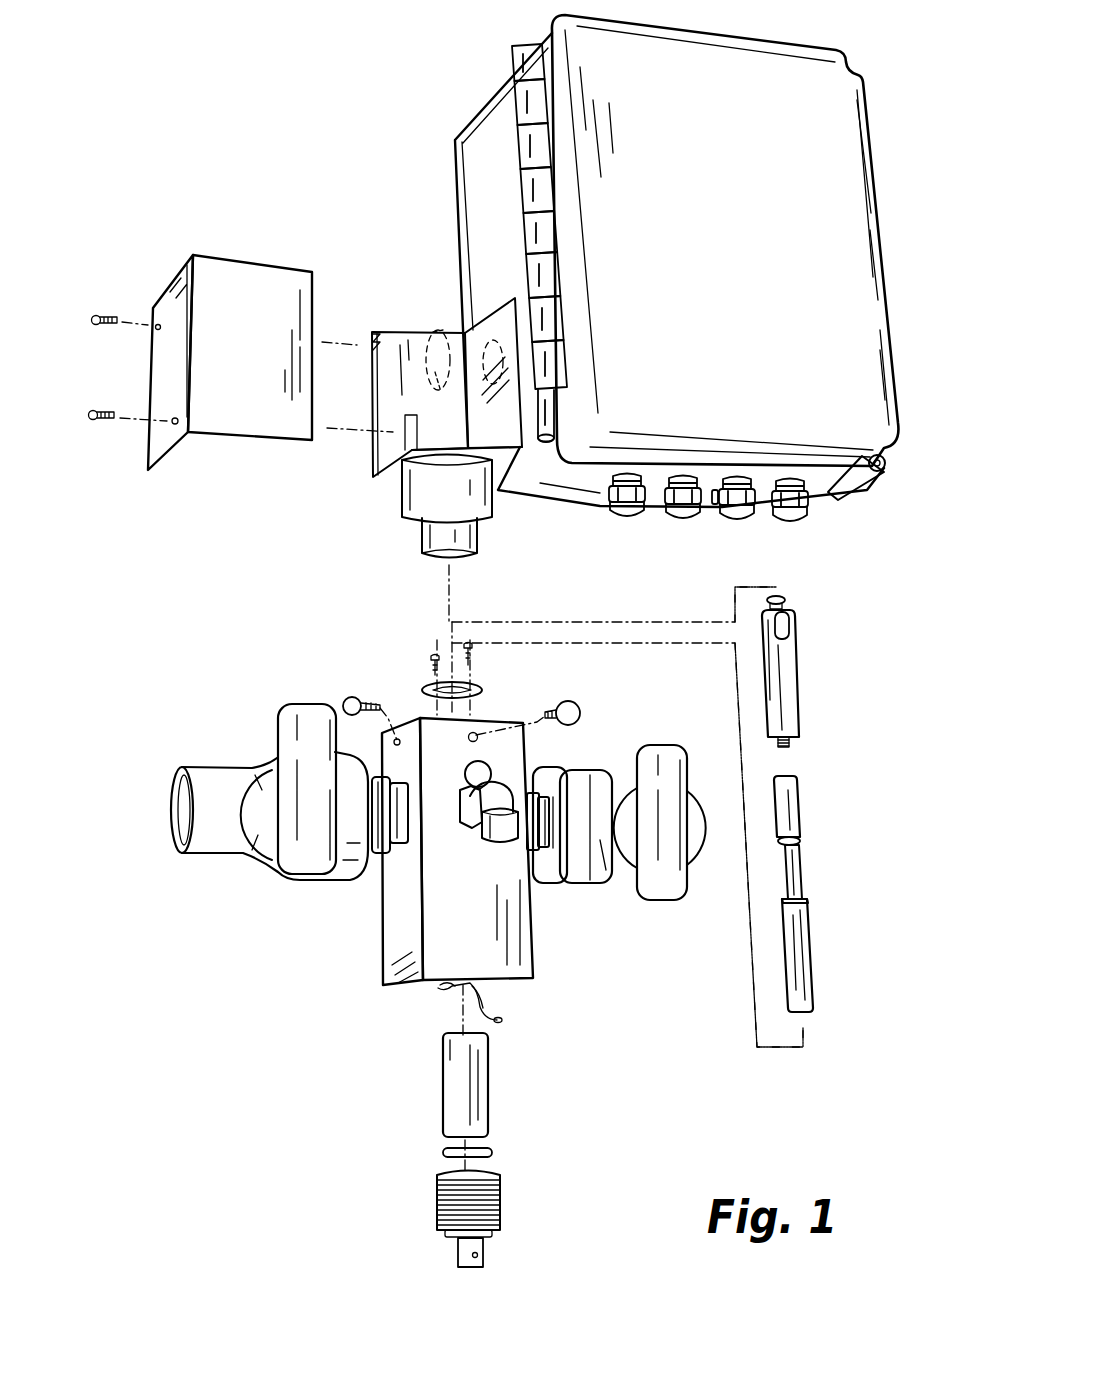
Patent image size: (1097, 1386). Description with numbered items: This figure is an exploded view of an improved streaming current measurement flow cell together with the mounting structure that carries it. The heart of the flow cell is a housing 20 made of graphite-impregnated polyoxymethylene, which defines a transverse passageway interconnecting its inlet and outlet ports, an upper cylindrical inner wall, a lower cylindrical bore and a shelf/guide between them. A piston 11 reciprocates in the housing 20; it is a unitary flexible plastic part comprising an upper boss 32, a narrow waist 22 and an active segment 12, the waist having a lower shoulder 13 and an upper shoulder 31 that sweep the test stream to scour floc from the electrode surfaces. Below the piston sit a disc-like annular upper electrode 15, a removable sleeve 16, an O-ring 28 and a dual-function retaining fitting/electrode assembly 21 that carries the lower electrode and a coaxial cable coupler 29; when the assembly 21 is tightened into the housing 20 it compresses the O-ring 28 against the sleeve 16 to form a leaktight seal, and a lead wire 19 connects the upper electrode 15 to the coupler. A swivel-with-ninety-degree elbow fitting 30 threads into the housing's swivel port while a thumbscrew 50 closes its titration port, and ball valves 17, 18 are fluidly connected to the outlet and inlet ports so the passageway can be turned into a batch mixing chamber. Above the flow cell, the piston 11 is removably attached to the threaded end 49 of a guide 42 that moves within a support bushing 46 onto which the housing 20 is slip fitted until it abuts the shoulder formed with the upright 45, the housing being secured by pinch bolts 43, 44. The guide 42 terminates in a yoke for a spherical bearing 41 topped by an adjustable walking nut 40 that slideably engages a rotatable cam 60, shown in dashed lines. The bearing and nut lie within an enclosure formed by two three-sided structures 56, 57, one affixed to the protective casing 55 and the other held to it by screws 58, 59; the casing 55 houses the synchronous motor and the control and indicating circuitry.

The piston 11 is at (832, 1045).
The active segment 12 is at (815, 970).
The lower shoulder 13 is at (804, 893).
The upper electrode 15 is at (483, 692).
The removable sleeve 16 is at (473, 1077).
The ball valve 17 is at (603, 912).
The ball valve 18 is at (215, 882).
The lead wire 19 is at (487, 998).
The housing 20 is at (390, 957).
The retaining fitting/electrode assembly 21 is at (532, 1227).
The waist 22 is at (800, 864).
The O-ring 28 is at (445, 1147).
The coaxial cable coupler 29 is at (448, 1235).
The swivel-with-90 degree elbow fitting 30 is at (493, 823).
The upper shoulder 31 is at (798, 841).
The upper boss 32 is at (795, 797).
The adjustable walking nut 40 is at (787, 596).
The spherical bearing 41 is at (791, 618).
The guide 42 is at (780, 670).
The pinch bolt 43 is at (345, 697).
The pinch bolt 44 is at (580, 712).
The upright 45 is at (417, 490).
The support bushing 46 is at (430, 533).
The threaded end 49 is at (791, 747).
The thumbscrew 50 is at (490, 773).
The protective casing 55 is at (889, 500).
The three-sided structure 56 is at (413, 350).
The three-sided structure 57 is at (247, 463).
The screw 58 is at (102, 310).
The screw 59 is at (98, 427).
The cam 60 is at (450, 327).